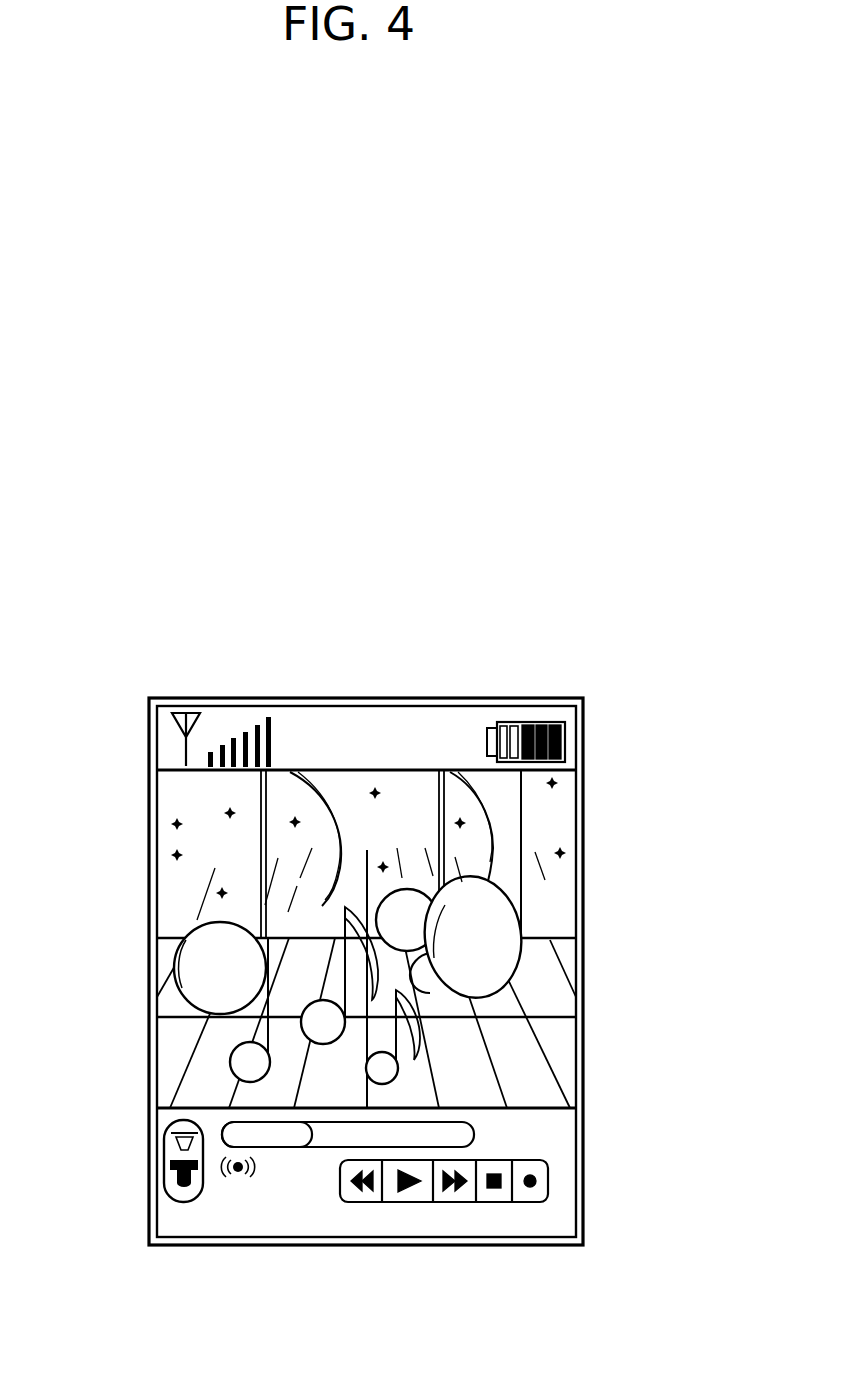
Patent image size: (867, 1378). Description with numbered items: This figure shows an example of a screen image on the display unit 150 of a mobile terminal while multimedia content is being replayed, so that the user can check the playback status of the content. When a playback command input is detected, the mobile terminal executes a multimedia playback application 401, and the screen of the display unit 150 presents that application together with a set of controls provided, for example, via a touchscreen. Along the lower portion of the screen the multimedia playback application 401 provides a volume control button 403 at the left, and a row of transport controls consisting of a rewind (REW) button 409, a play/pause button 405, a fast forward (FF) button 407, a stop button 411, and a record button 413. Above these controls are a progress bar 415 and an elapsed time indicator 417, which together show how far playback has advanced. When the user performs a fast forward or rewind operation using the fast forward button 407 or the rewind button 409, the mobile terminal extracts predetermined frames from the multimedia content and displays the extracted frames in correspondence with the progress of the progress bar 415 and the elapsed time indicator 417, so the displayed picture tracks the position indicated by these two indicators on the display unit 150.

The display unit 150 is at (588, 901).
The multimedia playback application 401 is at (168, 910).
The volume control button 403 is at (166, 1160).
The play/pause button 405 is at (405, 1197).
The fast forward (FF) button 407 is at (455, 1197).
The rewind (REW) button 409 is at (363, 1197).
The stop button 411 is at (493, 1197).
The record button 413 is at (549, 1180).
The progress bar 415 is at (440, 1133).
The elapsed time indicator 417 is at (570, 1133).